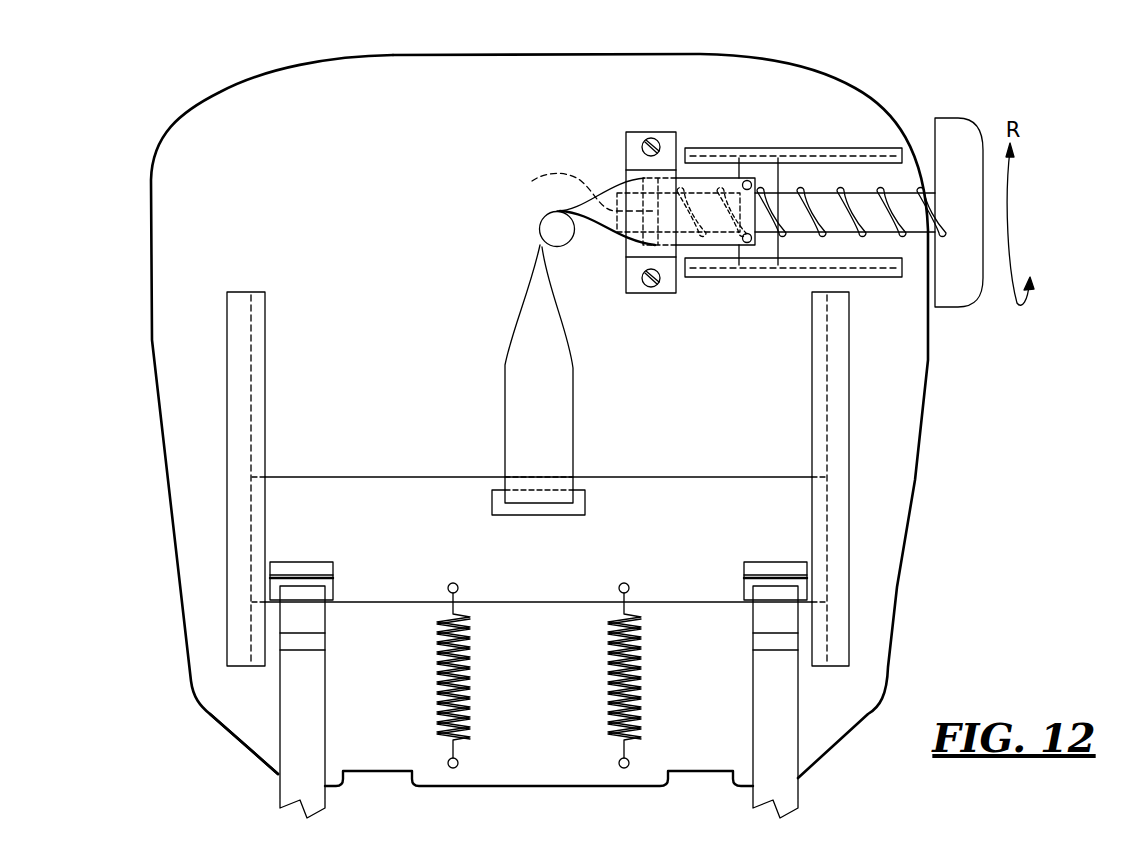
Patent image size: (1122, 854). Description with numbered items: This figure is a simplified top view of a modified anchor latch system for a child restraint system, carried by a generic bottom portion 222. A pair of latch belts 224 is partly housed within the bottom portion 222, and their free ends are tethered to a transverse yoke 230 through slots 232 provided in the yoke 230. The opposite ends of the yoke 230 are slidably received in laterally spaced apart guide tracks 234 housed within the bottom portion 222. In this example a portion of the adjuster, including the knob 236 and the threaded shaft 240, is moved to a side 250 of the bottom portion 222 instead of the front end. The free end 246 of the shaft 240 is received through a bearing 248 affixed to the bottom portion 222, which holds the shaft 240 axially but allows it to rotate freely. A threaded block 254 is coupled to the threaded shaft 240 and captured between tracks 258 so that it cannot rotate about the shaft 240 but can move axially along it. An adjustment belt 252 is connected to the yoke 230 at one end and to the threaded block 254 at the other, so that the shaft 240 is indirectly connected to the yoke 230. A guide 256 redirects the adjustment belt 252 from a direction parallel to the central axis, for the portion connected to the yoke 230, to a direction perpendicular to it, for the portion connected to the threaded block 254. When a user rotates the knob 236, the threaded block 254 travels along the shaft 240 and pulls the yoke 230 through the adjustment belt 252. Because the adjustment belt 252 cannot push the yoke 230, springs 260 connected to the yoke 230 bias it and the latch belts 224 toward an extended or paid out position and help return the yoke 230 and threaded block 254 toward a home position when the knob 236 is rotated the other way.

The bottom portion 222 is at (219, 722).
The latch belts 224 is at (302, 707).
The yoke 230 is at (388, 494).
The slots 232 is at (295, 578).
The guide tracks 234 is at (246, 300).
The knob 236 is at (957, 145).
The shaft 240 is at (818, 198).
The free end 246 is at (572, 207).
The bearing 248 is at (624, 169).
The side 250 is at (152, 367).
The adjustment belt 252 is at (553, 393).
The threaded block 254 is at (768, 180).
The guide 256 is at (563, 233).
The tracks 258 is at (710, 150).
The springs 260 is at (467, 657).